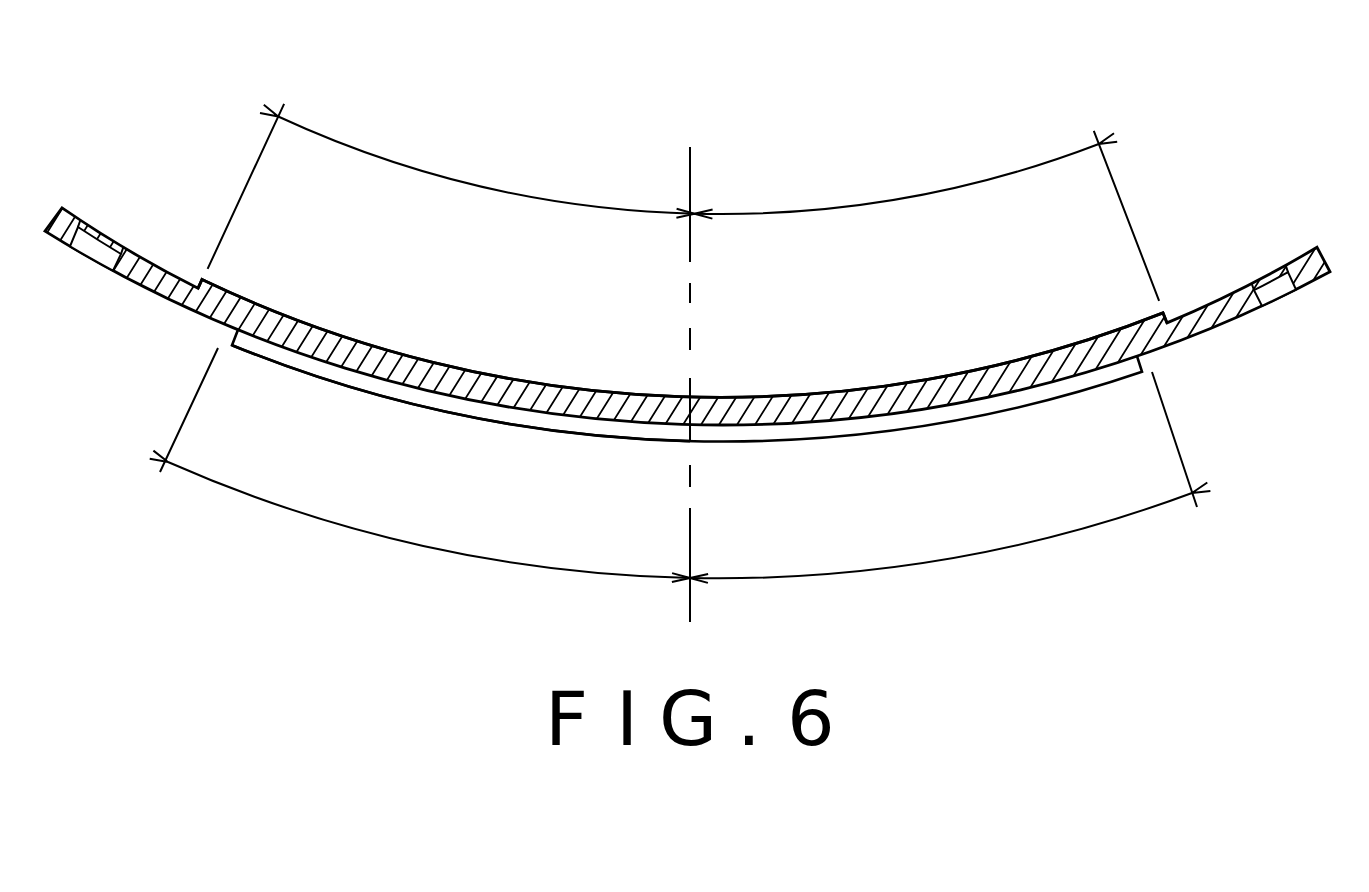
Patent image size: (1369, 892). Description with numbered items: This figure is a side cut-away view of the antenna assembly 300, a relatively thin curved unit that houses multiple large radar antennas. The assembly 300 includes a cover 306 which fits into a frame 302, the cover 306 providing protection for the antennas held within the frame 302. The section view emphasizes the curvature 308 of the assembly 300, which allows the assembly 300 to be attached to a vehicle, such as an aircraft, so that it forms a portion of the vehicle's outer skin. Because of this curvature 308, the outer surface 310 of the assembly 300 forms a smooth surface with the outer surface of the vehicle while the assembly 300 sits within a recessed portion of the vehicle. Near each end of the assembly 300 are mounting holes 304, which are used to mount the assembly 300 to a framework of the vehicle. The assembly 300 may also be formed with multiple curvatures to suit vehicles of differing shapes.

The antenna assembly 300 is at (1202, 343).
The frame 302 is at (227, 293).
The mounting holes 304 is at (110, 237).
The cover 306 is at (288, 367).
The curvature 308 is at (763, 210).
The outer surface 310 is at (767, 442).